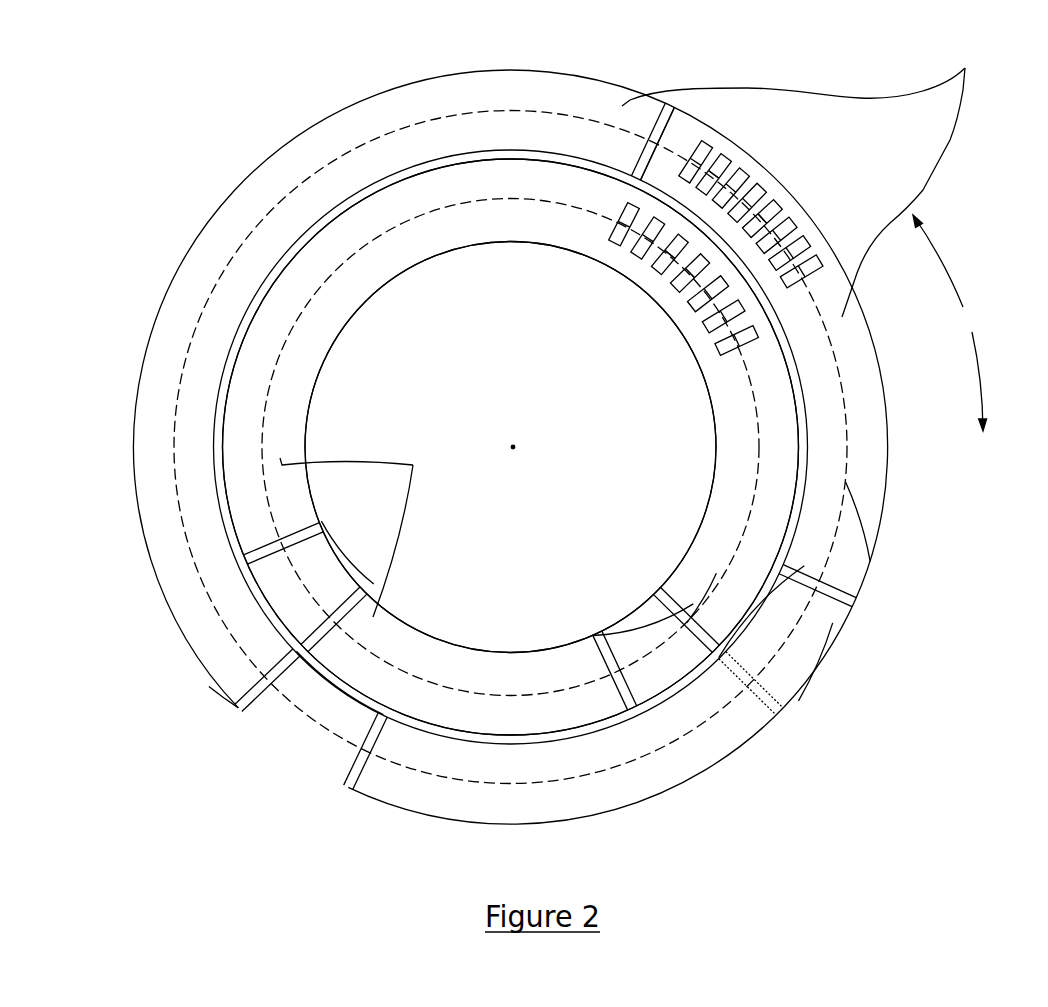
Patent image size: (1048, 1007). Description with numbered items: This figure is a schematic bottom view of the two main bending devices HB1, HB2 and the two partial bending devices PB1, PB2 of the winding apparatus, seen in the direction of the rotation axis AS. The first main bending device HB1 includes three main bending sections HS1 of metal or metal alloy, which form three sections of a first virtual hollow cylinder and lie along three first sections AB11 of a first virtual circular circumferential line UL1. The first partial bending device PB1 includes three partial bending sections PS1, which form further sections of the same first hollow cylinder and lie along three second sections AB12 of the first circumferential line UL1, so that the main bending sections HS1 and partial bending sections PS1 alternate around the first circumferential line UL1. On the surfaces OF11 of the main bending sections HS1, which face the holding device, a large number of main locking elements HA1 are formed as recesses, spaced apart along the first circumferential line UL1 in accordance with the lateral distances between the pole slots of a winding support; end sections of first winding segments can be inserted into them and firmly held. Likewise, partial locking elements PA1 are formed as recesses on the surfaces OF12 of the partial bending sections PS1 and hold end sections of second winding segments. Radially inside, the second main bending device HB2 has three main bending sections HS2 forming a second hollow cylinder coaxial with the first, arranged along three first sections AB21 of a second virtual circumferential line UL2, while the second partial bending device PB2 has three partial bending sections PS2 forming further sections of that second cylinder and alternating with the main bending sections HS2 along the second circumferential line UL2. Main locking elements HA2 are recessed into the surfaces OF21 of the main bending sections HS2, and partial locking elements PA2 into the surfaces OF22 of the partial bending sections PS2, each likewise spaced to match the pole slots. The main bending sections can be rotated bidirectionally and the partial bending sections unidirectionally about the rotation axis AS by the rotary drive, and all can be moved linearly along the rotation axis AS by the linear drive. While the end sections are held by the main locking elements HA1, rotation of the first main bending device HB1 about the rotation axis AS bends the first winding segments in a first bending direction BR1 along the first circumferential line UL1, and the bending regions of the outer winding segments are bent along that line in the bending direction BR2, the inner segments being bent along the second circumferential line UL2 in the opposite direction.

The first sections of the first circumferential line AB11 is at (384, 133).
The second sections of the first circumferential line AB12 is at (805, 613).
The first sections of the second circumferential line AB21 is at (476, 205).
The main bending sections HS1 is at (468, 87).
The main bending sections HS2 is at (325, 326).
The surfaces of the main bending sections OF11 is at (863, 340).
The surfaces of the partial bending sections OF12 is at (695, 133).
The surfaces of the main bending sections OF21 is at (527, 178).
The surfaces of the partial bending sections OF22 is at (700, 346).
The partial bending sections PS1 is at (686, 134).
The partial bending sections PS2 is at (312, 557).
The partial locking elements PA1 is at (757, 185).
The partial locking elements PA2 is at (712, 300).
The main locking elements HA1 is at (783, 215).
The main locking elements HA2 is at (656, 270).
The first main bending device HB1 is at (801, 181).
The second main bending device HB2 is at (370, 537).
The first partial bending device PB1 is at (781, 681).
The second partial bending device PB2 is at (621, 630).
The first circumferential line UL1 is at (840, 527).
The second circumferential line UL2 is at (703, 583).
The first bending direction BR1 is at (952, 261).
The bending direction BR2 is at (1000, 381).
The rotation axis AS is at (515, 440).